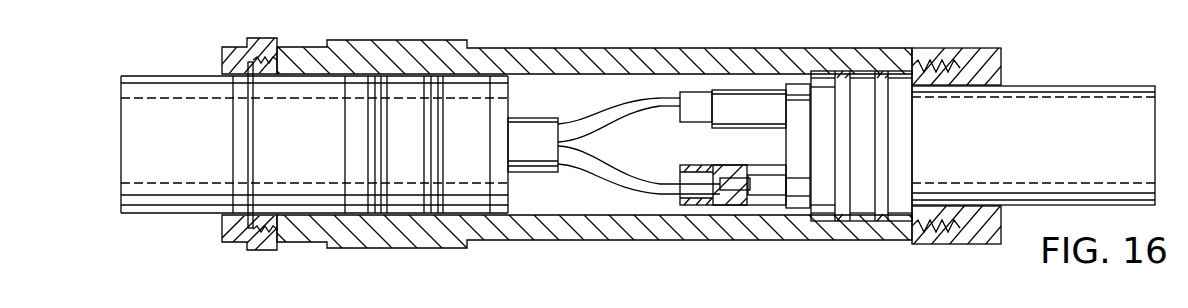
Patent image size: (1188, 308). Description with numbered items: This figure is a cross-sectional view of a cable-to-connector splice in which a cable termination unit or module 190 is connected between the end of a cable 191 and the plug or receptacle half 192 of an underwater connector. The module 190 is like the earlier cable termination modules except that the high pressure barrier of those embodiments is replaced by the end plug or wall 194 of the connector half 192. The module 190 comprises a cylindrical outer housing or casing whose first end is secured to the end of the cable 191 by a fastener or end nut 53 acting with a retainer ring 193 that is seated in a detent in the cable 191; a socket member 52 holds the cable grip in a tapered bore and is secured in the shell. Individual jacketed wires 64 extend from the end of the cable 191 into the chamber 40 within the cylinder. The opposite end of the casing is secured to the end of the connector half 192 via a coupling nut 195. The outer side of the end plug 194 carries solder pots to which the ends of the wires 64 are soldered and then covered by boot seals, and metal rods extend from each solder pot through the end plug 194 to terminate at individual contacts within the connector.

The first chamber 40 is at (603, 205).
The socket member 52 is at (463, 85).
The end nut 53 is at (258, 36).
The wires 64 is at (643, 115).
The cable termination unit or module 190 is at (672, 42).
The cable 191 is at (172, 80).
The plug or receptacle half of an underwater connector 192 is at (1067, 107).
The retainer ring 193 is at (248, 188).
The end plug or wall 194 is at (857, 205).
The coupling nut 195 is at (990, 63).